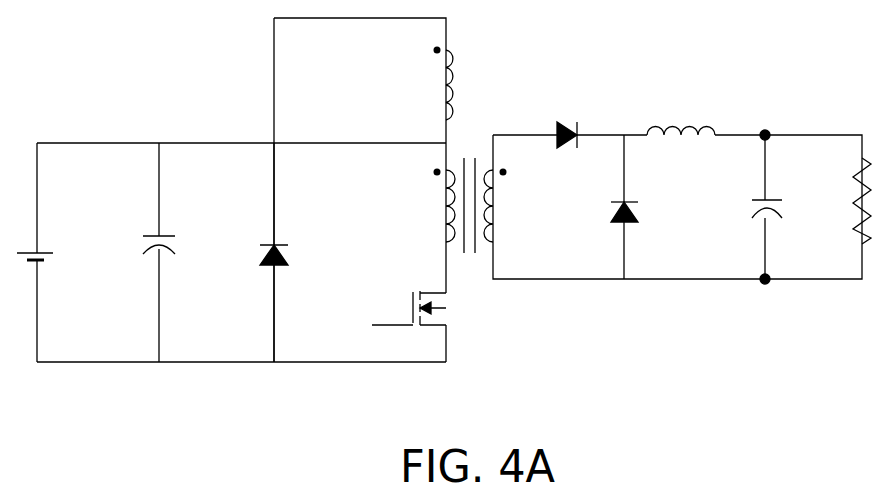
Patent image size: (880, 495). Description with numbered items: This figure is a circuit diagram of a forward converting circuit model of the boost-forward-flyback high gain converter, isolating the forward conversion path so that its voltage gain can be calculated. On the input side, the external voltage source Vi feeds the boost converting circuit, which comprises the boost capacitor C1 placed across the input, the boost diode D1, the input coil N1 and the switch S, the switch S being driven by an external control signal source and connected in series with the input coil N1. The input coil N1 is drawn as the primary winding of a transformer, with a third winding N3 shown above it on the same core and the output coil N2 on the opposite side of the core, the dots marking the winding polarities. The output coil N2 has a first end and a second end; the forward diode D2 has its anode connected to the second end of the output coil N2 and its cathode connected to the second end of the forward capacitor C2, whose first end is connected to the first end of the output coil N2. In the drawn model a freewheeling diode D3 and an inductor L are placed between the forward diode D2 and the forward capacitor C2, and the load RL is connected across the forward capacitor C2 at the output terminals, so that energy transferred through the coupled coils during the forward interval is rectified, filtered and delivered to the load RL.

The external voltage source Vi is at (53, 256).
The boost capacitor C1 is at (179, 252).
The boost diode D1 is at (296, 252).
The input coil N1 is at (424, 206).
The output coil N2 is at (513, 207).
The tertiary (reset) winding N3 is at (423, 84).
The switch S is at (409, 306).
The forward diode D2 is at (570, 117).
The output inductor L is at (681, 111).
The third diode (freewheeling) D3 is at (648, 214).
The forward capacitor C2 is at (782, 228).
The load RL is at (840, 198).